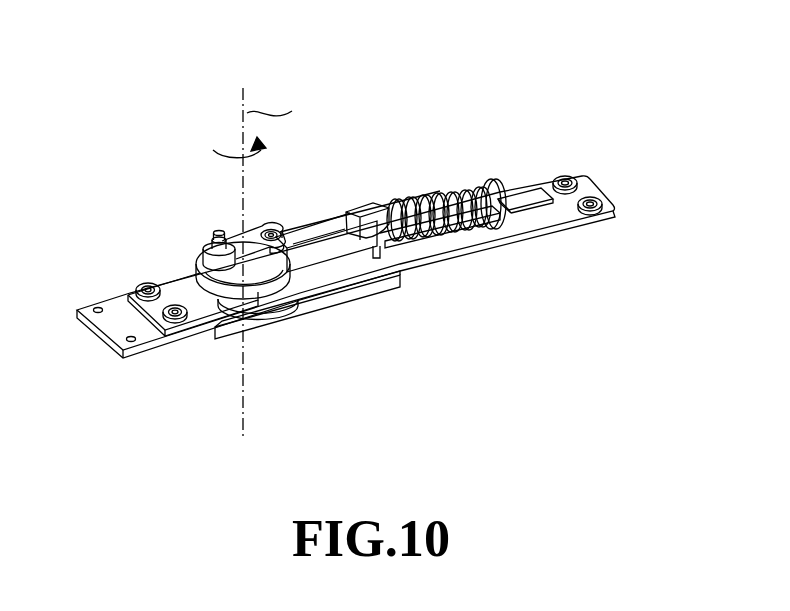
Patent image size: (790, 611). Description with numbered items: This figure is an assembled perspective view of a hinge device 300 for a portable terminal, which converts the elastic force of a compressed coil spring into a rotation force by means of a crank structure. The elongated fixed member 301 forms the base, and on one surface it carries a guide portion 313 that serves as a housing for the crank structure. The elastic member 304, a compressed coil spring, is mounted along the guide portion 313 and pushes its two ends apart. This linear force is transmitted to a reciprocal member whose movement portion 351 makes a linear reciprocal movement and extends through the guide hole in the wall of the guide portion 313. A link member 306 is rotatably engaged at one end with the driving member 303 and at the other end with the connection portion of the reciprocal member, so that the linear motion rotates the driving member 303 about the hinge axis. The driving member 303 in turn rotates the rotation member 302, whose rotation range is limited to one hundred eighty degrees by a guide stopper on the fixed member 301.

The hinge device 300 is at (401, 33).
The fixed member 301 is at (583, 190).
The rotation member 302 is at (362, 297).
The driving member 303 is at (192, 277).
The elastic member 304 is at (452, 178).
The link member 306 is at (209, 240).
The guide portion 313 is at (374, 214).
The movement portion 351 is at (337, 232).